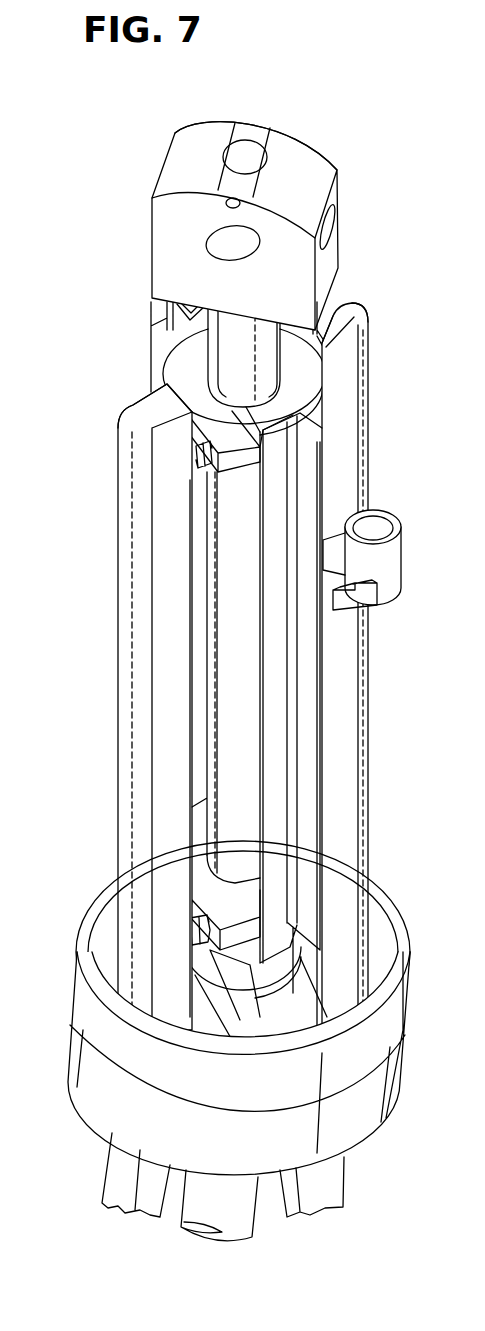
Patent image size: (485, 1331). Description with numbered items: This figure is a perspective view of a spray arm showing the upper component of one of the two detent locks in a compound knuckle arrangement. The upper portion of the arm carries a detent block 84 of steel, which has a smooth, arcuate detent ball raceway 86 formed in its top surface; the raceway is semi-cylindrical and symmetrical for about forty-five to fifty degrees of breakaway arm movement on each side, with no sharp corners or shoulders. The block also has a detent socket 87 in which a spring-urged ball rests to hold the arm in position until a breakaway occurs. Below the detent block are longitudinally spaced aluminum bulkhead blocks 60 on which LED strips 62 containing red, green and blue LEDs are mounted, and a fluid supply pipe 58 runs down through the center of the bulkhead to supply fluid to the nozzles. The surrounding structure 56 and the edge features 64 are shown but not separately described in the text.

The base cup 56 is at (402, 1060).
The fluid supply pipe 58 is at (213, 708).
The bulkhead block 60 is at (162, 325).
The LED strip 62 is at (127, 550).
The plate edge 64 is at (157, 462).
The detent block 84 is at (152, 248).
The detent ball raceway 86 is at (333, 160).
The detent socket 87 is at (247, 142).